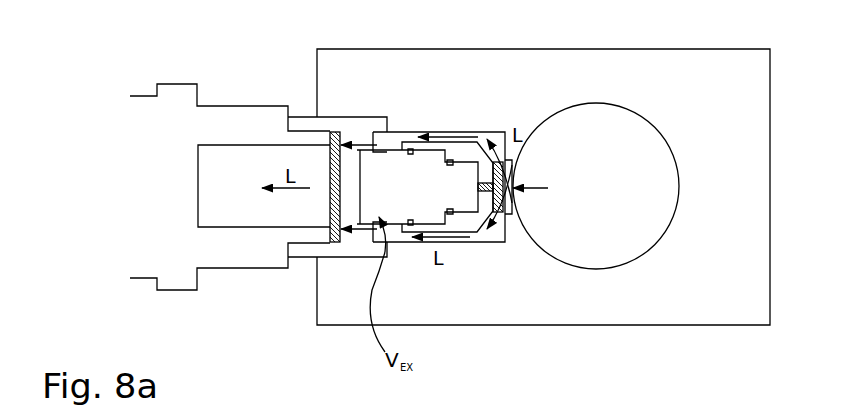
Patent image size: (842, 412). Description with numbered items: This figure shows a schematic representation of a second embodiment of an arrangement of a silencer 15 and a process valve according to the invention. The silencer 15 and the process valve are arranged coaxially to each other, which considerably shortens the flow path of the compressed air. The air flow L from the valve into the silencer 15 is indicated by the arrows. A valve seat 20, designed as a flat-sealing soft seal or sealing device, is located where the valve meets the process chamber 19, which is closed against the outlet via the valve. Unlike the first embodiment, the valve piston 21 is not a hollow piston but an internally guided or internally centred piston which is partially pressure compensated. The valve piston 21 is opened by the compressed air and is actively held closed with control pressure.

The silencer 15 is at (175, 267).
The process chamber 19 is at (618, 257).
The valve seat 20 is at (514, 200).
The valve piston 21 is at (463, 148).